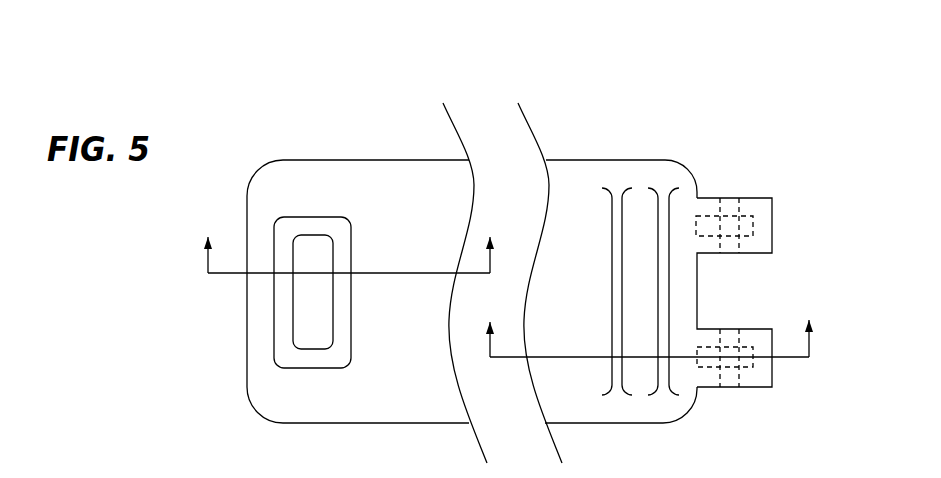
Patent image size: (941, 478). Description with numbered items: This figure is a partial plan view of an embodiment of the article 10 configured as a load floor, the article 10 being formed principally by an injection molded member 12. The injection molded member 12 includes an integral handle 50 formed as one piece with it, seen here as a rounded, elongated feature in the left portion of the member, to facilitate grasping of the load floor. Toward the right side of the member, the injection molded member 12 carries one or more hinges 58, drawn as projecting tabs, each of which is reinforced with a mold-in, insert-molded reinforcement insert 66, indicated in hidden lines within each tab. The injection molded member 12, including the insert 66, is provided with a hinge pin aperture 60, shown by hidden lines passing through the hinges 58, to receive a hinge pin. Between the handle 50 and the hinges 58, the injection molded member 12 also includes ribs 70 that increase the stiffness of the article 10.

The article 10 is at (807, 108).
The injection molded member 12 is at (340, 160).
The integral handle 50 is at (245, 313).
The hinge 58 is at (768, 186).
The hinge pin aperture 60 is at (729, 197).
The reinforcement insert 66 is at (760, 237).
The ribs 70 is at (612, 188).